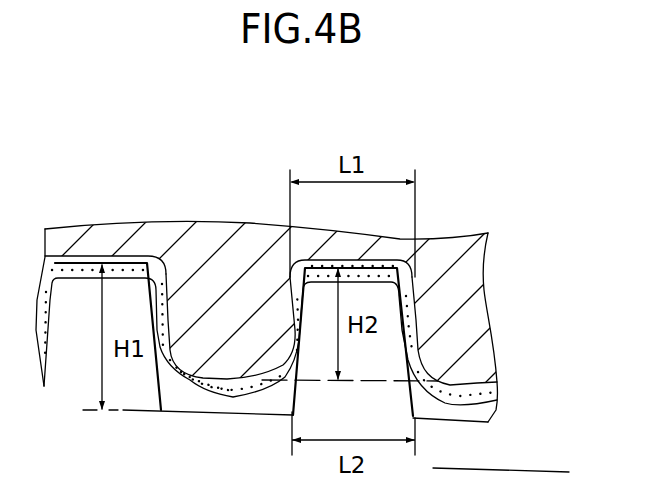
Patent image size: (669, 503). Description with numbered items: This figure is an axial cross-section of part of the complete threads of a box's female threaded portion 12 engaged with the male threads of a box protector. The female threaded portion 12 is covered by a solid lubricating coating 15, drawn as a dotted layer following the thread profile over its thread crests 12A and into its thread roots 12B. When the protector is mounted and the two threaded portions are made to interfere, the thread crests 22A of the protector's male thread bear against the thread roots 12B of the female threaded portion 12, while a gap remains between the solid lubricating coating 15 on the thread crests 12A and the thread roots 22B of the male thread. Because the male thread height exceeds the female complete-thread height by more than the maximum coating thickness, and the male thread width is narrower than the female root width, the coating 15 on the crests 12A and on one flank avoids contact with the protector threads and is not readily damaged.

The female threaded portion 12 is at (484, 263).
The thread crests 12A is at (230, 377).
The thread roots 12B is at (348, 259).
The solid lubricating coating 15 is at (502, 400).
The thread crests 22A is at (328, 270).
The thread roots 22B is at (223, 413).